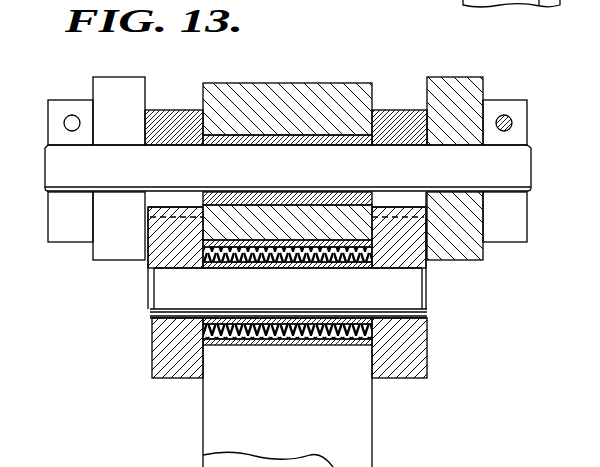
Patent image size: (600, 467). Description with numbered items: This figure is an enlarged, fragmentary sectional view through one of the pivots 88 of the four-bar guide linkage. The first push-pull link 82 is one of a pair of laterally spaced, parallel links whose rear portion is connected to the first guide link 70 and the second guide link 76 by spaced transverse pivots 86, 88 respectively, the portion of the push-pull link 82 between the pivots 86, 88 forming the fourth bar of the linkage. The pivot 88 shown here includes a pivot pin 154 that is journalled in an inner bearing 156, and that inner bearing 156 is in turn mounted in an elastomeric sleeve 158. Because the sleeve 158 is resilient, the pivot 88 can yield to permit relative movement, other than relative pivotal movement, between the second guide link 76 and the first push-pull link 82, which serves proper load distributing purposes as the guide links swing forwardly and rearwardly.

The first guide link 70 is at (122, 83).
The transverse pivot 86 is at (265, 141).
The transverse pivot 88 is at (192, 299).
The pivot pin 154 is at (419, 298).
The second guide link 76 is at (158, 367).
The inner bearing 156 is at (352, 332).
The elastomeric sleeve 158 is at (246, 329).
The first push-pull link 82 is at (350, 444).